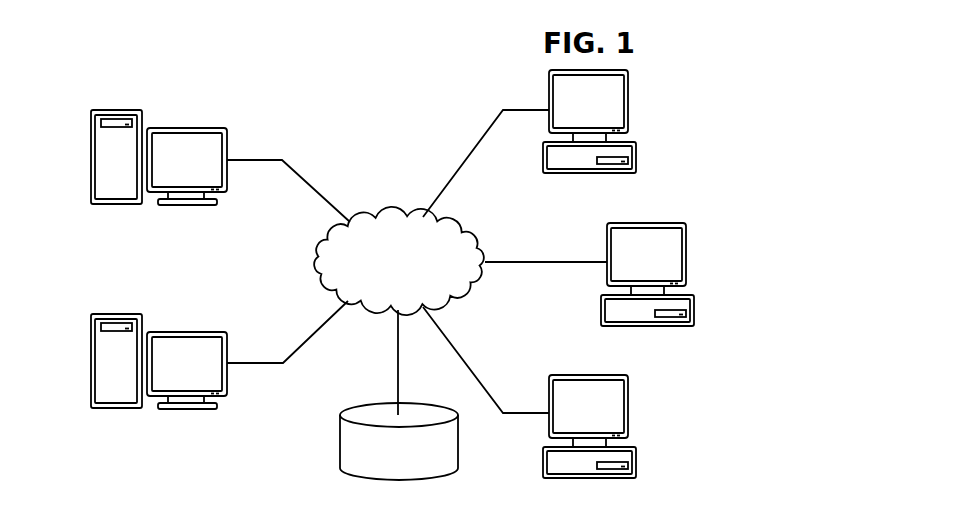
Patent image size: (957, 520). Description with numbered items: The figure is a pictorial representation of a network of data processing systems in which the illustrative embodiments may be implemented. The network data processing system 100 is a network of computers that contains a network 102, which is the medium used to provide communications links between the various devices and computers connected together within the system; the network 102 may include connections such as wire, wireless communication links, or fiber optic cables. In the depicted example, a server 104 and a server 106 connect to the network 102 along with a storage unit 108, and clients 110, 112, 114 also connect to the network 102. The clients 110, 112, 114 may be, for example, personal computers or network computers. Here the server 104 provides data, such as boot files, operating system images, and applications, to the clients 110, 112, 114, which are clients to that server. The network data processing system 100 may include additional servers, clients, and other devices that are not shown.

The network data processing system 100 is at (283, 76).
The network 102 is at (390, 213).
The server 104 is at (91, 158).
The server 106 is at (92, 361).
The storage unit 108 is at (340, 440).
The client 110 is at (637, 157).
The client 112 is at (695, 310).
The client 114 is at (637, 462).